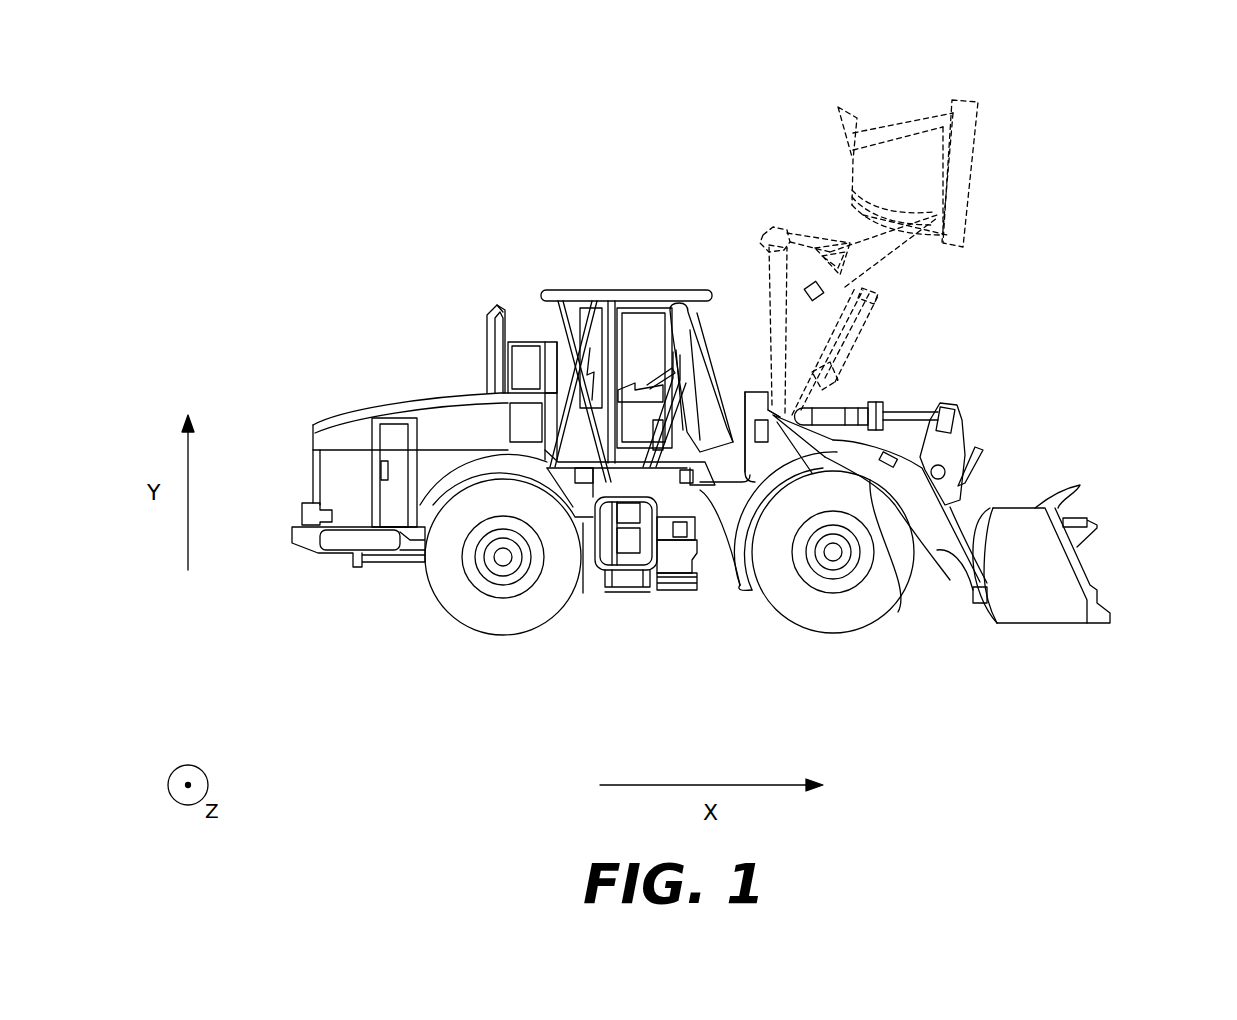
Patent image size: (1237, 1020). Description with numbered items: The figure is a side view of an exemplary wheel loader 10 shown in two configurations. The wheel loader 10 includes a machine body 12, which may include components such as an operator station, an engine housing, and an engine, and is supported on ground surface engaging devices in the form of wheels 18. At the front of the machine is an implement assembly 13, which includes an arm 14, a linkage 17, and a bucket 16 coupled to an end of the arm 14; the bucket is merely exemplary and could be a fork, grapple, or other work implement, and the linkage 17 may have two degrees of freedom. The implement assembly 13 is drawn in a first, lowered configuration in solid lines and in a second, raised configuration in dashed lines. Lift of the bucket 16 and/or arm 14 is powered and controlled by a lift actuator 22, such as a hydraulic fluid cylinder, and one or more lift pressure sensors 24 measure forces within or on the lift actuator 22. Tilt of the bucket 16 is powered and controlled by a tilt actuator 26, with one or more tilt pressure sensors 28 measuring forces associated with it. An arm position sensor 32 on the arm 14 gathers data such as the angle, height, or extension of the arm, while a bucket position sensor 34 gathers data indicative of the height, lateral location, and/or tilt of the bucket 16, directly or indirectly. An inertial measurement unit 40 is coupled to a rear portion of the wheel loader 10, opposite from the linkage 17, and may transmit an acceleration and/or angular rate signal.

The wheel loader 10 is at (403, 210).
The machine body 12 is at (587, 593).
The implement assembly 13 is at (768, 137).
The arm 14 is at (763, 410).
The bucket 16 is at (1077, 562).
The linkage 17 is at (770, 215).
The wheels 18 is at (432, 600).
The lift actuator 22 is at (847, 350).
The lift pressure sensor 24 is at (817, 403).
The tilt actuator 26 is at (768, 268).
The tilt pressure sensor 28 is at (770, 332).
The arm position sensor 32 is at (812, 288).
The bucket position sensor 34 is at (950, 214).
The inertial measurement unit 40 is at (298, 512).